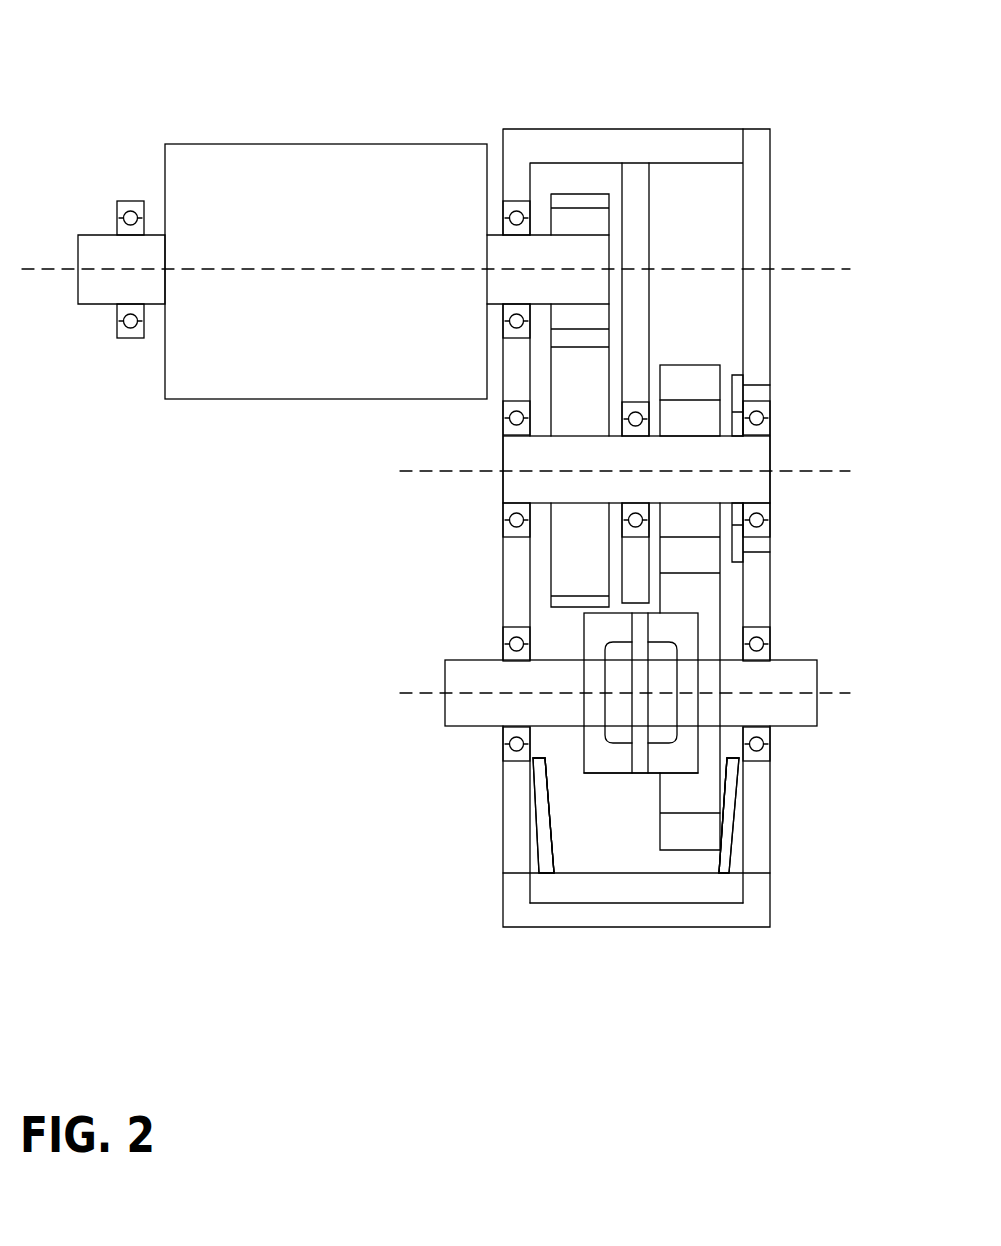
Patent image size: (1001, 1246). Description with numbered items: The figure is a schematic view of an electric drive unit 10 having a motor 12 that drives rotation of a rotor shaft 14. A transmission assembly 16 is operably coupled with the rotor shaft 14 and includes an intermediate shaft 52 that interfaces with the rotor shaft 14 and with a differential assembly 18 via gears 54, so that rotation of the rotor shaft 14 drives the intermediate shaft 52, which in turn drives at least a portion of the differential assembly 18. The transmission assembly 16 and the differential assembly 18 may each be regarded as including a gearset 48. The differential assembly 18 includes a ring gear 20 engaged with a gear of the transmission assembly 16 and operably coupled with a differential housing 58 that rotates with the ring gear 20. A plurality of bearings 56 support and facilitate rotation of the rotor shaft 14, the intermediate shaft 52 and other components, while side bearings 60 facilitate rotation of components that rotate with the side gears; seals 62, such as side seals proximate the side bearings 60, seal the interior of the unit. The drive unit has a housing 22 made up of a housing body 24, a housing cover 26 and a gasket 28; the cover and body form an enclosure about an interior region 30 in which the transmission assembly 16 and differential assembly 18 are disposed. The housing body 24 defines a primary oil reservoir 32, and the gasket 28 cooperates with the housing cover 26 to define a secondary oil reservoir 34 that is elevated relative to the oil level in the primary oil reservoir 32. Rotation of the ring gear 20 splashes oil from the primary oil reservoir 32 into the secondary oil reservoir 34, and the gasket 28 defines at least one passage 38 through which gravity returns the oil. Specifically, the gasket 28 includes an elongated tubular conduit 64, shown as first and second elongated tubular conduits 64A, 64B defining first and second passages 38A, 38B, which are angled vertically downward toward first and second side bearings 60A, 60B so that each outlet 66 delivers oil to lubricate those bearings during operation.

The electric drive unit 10 is at (545, 106).
The motor 12 is at (310, 141).
The rotor shaft 14 is at (565, 242).
The transmission assembly 16 is at (604, 376).
The differential assembly 18 is at (685, 590).
The ring gear 20 is at (674, 642).
The housing 22 is at (504, 813).
The housing body 24 is at (762, 823).
The housing cover 26 is at (617, 917).
The gasket 28 is at (636, 874).
The interior region 30 is at (559, 647).
The primary oil reservoir 32 is at (587, 787).
The secondary oil reservoir 34 is at (594, 889).
The passage 38 is at (629, 880).
The first passage 38A is at (547, 845).
The second passage 38B is at (727, 853).
The gearset 48 is at (696, 409).
The intermediate shaft 52 is at (728, 457).
The gears 54 is at (686, 380).
The bearings 56 is at (508, 213).
The differential housing 58 is at (697, 752).
The side bearings 60 is at (613, 708).
The first side bearing 60A is at (505, 753).
The second side bearing 60B is at (745, 752).
The seals 62 is at (762, 632).
The elongated tubular conduit 64 is at (631, 849).
The first elongated tubular conduit 64A is at (540, 832).
The second elongated tubular conduit 64B is at (733, 837).
The outlet 66 is at (541, 758).